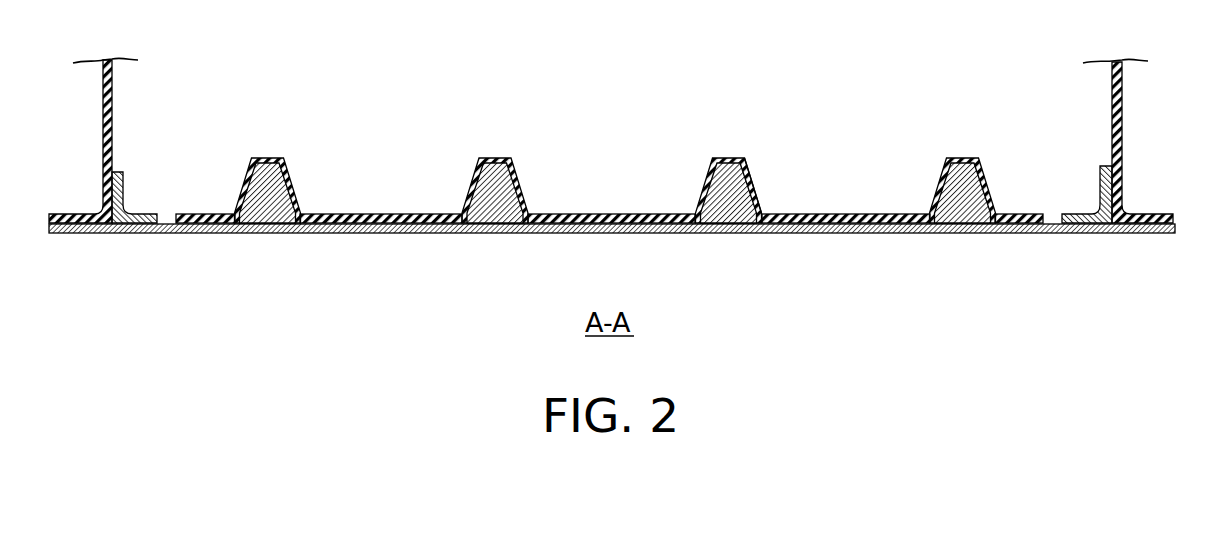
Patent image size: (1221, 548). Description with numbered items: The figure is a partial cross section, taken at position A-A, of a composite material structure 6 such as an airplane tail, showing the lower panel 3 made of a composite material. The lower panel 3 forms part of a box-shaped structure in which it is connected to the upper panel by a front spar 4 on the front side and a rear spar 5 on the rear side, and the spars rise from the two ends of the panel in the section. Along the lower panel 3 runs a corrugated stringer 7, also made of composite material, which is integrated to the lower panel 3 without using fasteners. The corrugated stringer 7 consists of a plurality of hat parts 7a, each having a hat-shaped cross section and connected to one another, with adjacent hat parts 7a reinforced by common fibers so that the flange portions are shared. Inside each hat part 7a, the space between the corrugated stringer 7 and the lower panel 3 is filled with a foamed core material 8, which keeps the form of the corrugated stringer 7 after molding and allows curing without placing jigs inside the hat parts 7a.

The lower panel 3 is at (822, 233).
The front spar 4 is at (113, 110).
The rear spar 5 is at (1122, 117).
The composite material structure 6 is at (882, 236).
The corrugated stringer 7 is at (722, 160).
The hat part 7a is at (752, 178).
The foamed core material 8 is at (708, 192).